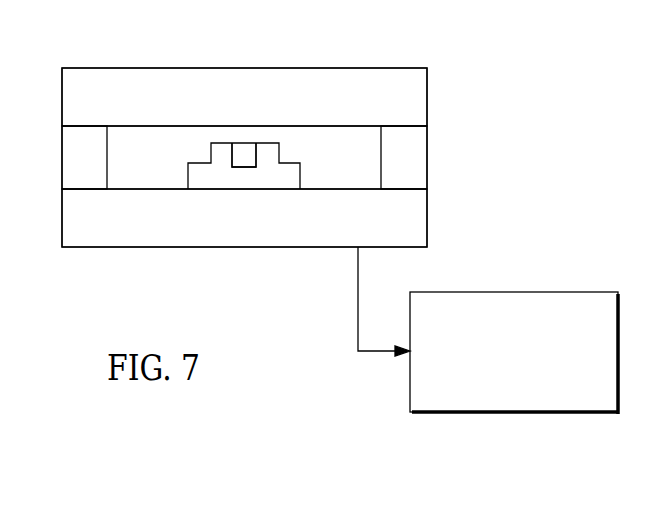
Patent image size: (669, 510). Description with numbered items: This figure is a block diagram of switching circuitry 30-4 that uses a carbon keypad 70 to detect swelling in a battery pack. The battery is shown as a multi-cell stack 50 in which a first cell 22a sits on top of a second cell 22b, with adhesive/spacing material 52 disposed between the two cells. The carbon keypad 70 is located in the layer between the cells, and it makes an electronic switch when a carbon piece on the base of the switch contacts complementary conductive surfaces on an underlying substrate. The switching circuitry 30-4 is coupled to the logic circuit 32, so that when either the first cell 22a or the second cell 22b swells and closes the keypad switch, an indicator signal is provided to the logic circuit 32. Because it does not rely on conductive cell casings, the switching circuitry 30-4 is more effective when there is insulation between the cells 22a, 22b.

The multi-cell stack 50 is at (503, 35).
The first cell 22a is at (427, 97).
The second cell 22b is at (427, 217).
The adhesive/spacing material 52 is at (62, 158).
The carbon keypad 70 is at (200, 158).
The switching circuitry 30-4 is at (296, 153).
The logic circuit 32 is at (567, 292).